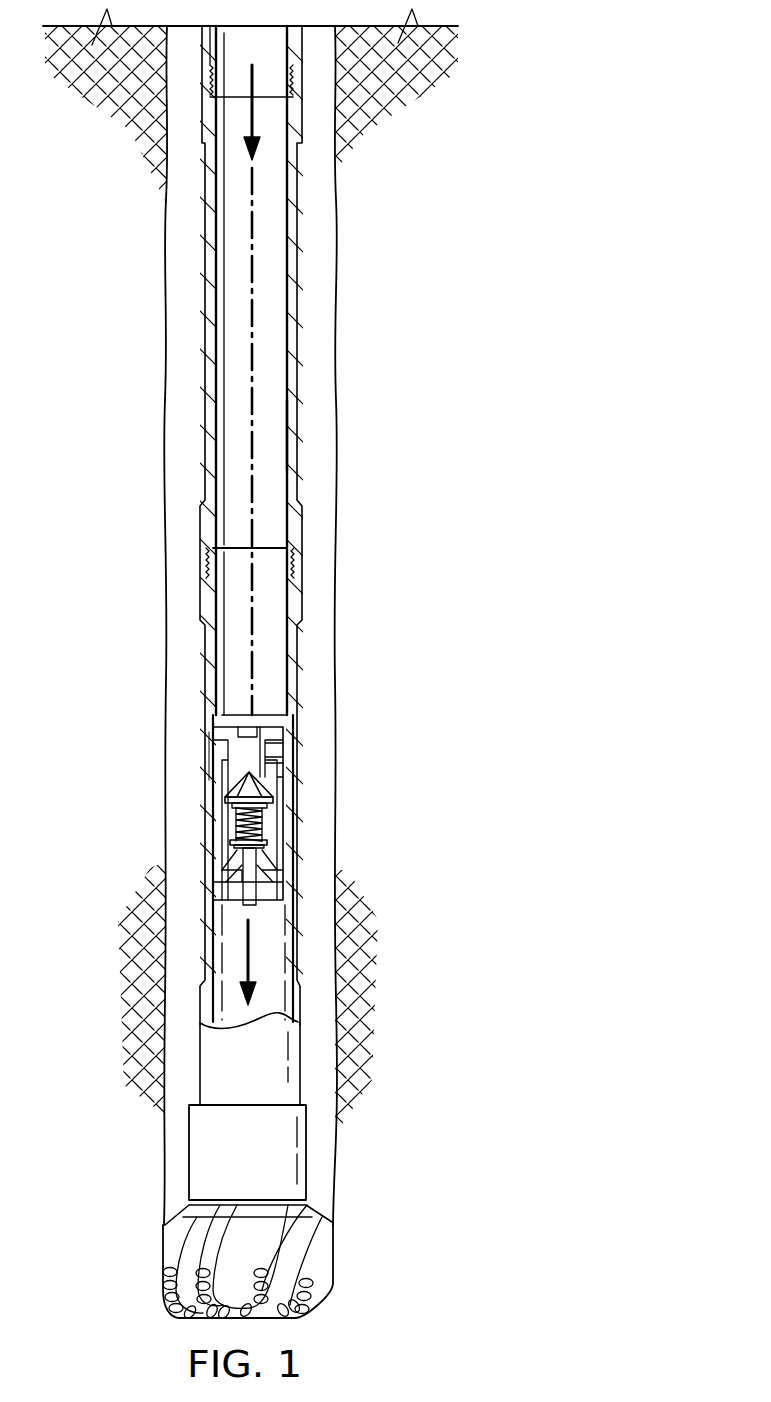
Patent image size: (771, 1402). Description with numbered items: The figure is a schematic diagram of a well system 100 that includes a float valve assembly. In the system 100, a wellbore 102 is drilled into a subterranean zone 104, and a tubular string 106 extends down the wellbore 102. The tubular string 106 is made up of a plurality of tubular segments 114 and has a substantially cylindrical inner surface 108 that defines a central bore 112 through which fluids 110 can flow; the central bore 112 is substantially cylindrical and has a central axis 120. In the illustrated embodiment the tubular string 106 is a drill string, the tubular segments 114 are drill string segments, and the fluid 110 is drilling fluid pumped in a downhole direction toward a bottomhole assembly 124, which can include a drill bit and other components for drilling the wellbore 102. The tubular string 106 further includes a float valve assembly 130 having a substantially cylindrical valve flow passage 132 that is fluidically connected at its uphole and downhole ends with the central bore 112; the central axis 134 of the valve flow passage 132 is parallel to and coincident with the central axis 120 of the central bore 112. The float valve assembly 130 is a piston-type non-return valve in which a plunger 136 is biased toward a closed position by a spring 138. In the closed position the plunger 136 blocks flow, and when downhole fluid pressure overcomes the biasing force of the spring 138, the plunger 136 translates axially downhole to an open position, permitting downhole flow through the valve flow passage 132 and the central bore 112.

The system 100 is at (133, 372).
The wellbore 102 is at (160, 683).
The subterranean zone 104 is at (462, 1171).
The tubular string 106 is at (200, 447).
The inner surface 108 is at (288, 457).
The fluids 110 is at (250, 117).
The central bore 112 is at (270, 261).
The tubular segments 114 is at (298, 345).
The central axis 120 is at (224, 297).
The bottomhole assembly 124 is at (158, 1263).
The float valve assembly 130 is at (310, 775).
The valve flow passage 132 is at (238, 833).
The central axis 134 is at (250, 642).
The plunger 136 is at (225, 786).
The spring 138 is at (262, 818).